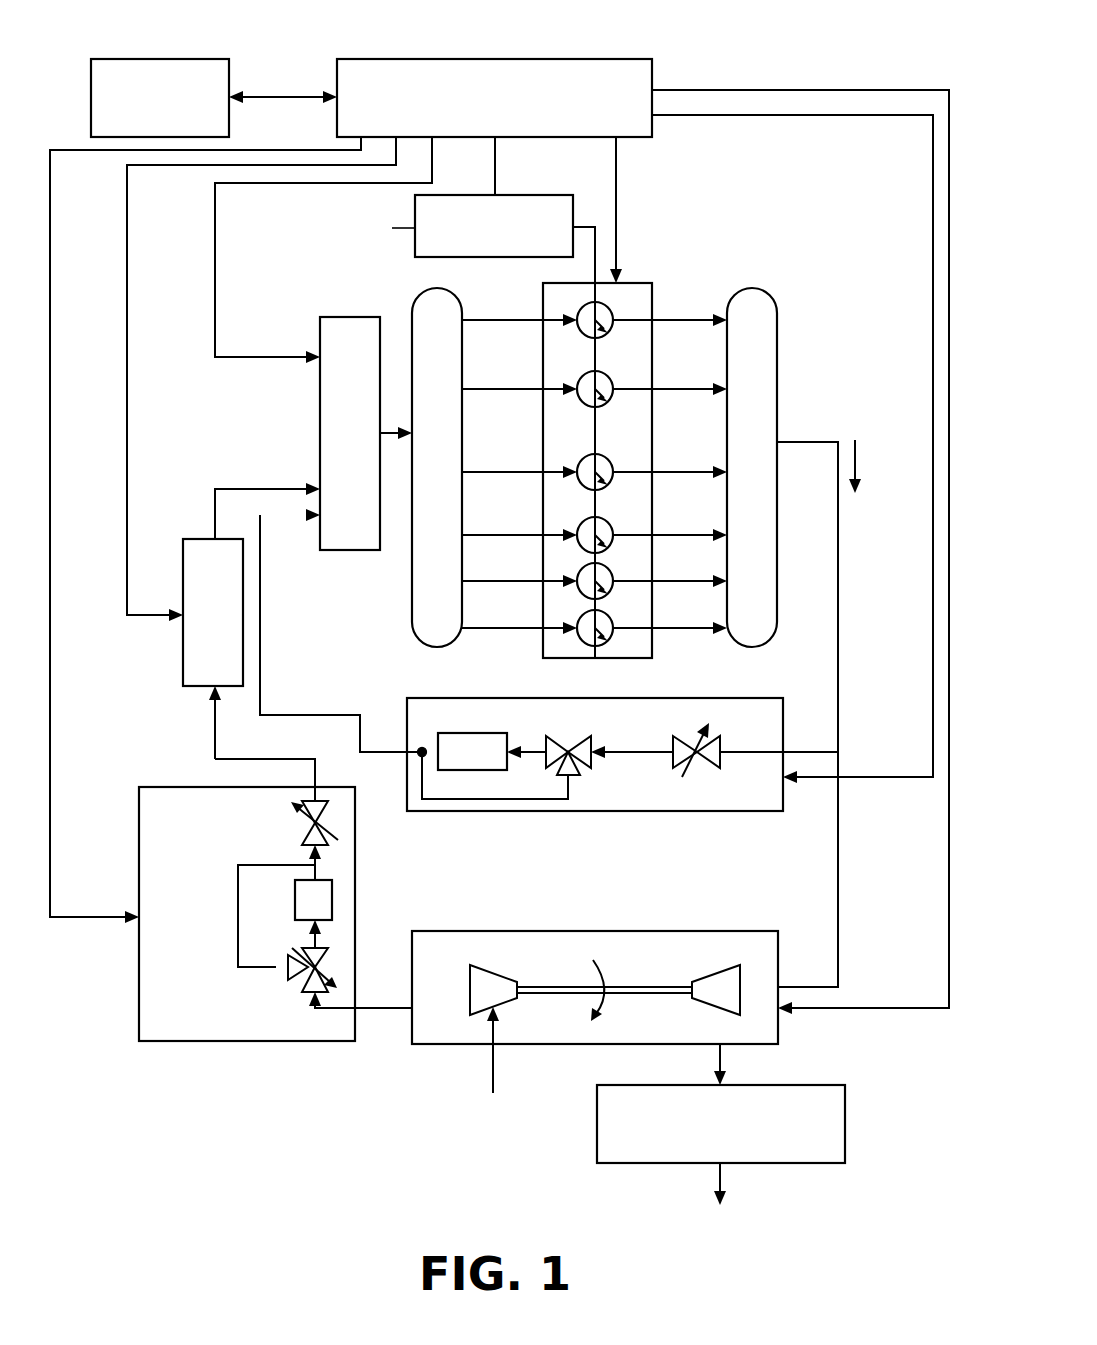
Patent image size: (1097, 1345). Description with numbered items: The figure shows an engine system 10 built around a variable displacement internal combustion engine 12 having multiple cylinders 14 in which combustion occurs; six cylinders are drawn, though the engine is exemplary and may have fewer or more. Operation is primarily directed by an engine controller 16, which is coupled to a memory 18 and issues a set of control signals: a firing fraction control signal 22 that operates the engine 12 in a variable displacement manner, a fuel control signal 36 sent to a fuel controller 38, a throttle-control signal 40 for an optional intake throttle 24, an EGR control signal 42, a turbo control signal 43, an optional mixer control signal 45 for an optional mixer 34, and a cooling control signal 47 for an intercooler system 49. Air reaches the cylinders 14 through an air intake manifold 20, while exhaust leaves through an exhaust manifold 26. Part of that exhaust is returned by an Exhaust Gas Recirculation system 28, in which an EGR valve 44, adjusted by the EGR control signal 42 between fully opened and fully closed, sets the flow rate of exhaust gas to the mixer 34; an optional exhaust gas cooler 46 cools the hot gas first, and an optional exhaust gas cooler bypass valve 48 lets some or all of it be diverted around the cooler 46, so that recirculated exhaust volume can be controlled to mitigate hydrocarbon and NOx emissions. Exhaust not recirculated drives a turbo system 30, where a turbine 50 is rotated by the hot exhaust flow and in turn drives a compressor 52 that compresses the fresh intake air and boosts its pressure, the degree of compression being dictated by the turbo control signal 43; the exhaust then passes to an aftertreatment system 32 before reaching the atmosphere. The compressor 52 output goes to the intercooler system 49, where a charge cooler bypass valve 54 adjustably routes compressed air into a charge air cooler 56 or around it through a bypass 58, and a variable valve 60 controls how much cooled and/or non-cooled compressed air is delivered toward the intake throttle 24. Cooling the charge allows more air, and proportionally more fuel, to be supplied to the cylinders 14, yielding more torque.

The engine system 10 is at (266, 1094).
The variable displacement internal combustion engine 12 is at (594, 434).
The cylinders 14 is at (611, 305).
The engine controller 16 is at (573, 59).
The memory 18 is at (195, 59).
The air intake manifold 20 is at (412, 298).
The firing fraction control signal 22 is at (618, 210).
The intake throttle 24 is at (302, 621).
The exhaust manifold 26 is at (760, 288).
The Exhaust Gas Recirculation (EGR) system 28 is at (622, 736).
The turbo system 30 is at (600, 1022).
The aftertreatment system 32 is at (815, 1085).
The mixer 34 is at (350, 550).
The fuel control signal 36 is at (495, 163).
The fuel controller 38 is at (573, 213).
The throttle-control signal 40 is at (127, 368).
The EGR control signal 42 is at (890, 117).
The turbo control signal 43 is at (887, 88).
The EGR valve 44 is at (700, 757).
The mixer control signal 45 is at (215, 275).
The exhaust gas cooler 46 is at (492, 751).
The cooling control signal 47 is at (97, 917).
The exhaust gas cooler bypass valve 48 is at (573, 745).
The intercooler system 49 is at (275, 883).
The turbine 50 is at (712, 975).
The compressor 52 is at (497, 975).
The charge cooler bypass valve 54 is at (327, 955).
The charge air cooler 56 is at (332, 900).
The bypass 58 is at (238, 905).
The variable valve 60 is at (327, 817).